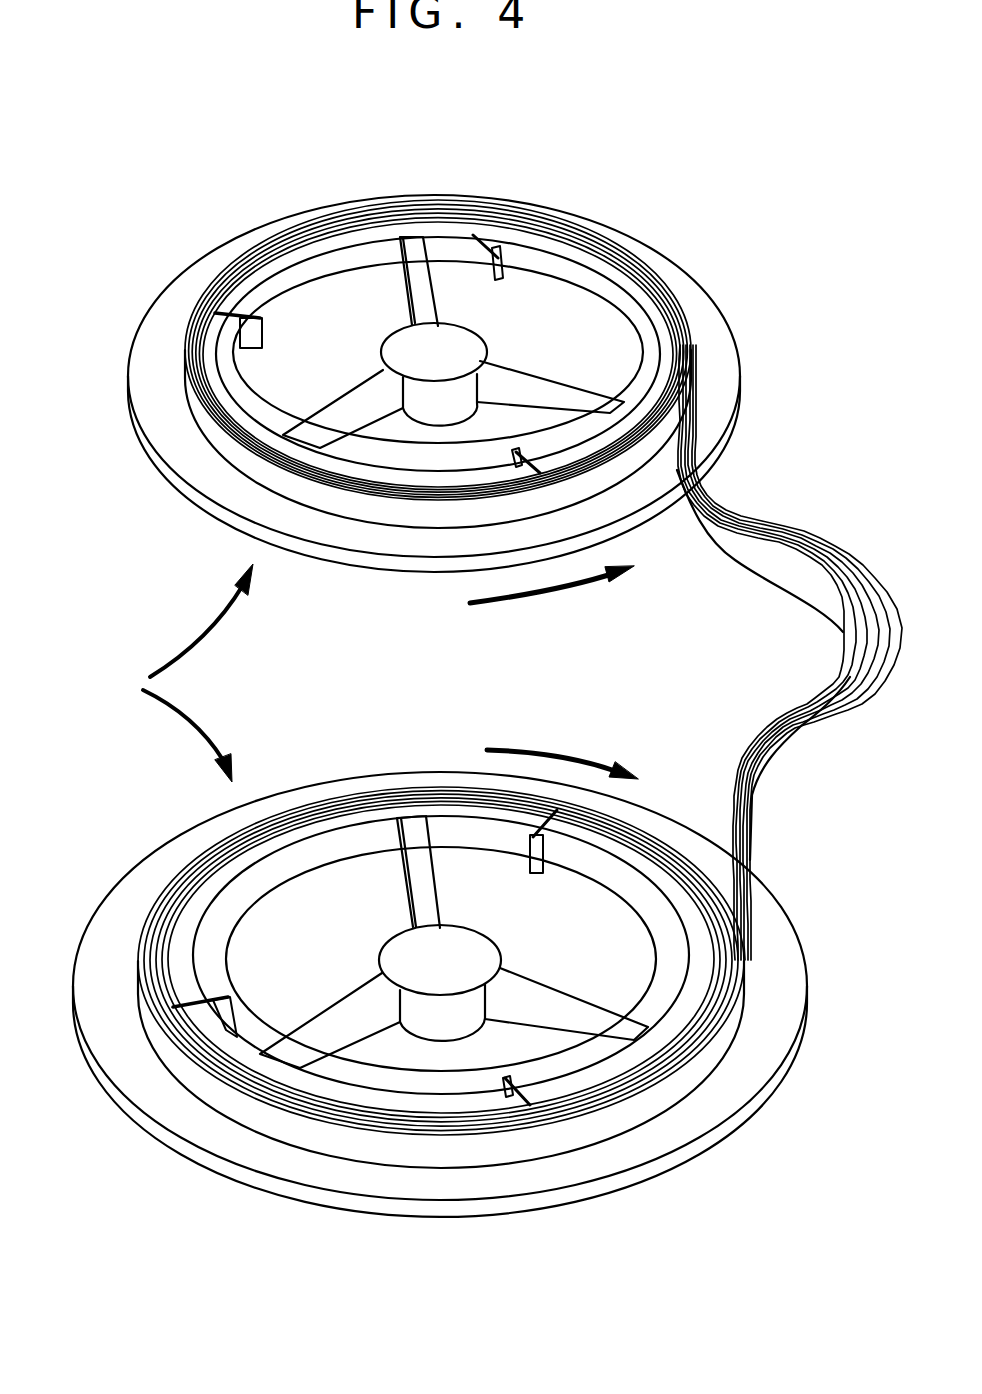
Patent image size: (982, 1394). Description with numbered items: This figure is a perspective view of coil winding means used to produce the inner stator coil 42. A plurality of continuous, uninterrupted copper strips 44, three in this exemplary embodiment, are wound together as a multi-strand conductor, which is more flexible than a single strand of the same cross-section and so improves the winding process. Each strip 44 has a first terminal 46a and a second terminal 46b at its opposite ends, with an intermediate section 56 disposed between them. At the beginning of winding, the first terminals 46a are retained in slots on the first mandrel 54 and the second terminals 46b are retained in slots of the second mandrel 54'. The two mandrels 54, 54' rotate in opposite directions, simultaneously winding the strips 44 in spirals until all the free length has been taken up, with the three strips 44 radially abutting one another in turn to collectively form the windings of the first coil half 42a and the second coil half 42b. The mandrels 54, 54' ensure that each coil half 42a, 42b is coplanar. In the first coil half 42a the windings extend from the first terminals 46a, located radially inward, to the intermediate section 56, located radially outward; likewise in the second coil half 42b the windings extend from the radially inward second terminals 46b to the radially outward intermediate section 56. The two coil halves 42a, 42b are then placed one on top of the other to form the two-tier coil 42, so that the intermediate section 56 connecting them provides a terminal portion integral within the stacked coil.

The inner stator coil 42 is at (179, 673).
The first coil half 42a is at (215, 313).
The second coil half 42b is at (191, 1078).
The strip 44 is at (813, 541).
The first terminals 46a is at (253, 253).
The second terminals 46b is at (530, 837).
The first mandrel 54 is at (413, 383).
The second mandrel 54' is at (440, 1024).
The intermediate section 56 is at (865, 707).